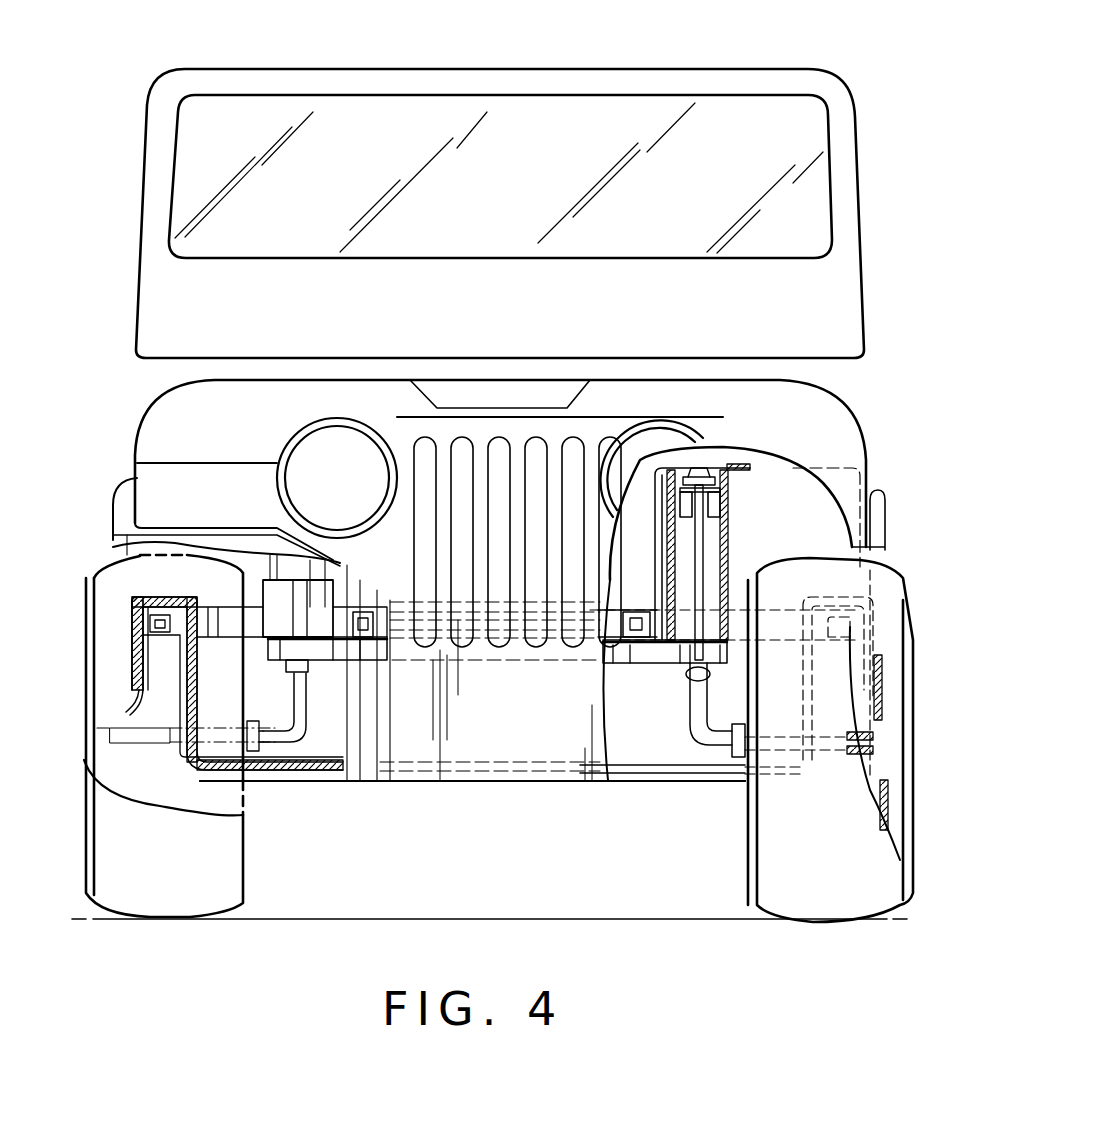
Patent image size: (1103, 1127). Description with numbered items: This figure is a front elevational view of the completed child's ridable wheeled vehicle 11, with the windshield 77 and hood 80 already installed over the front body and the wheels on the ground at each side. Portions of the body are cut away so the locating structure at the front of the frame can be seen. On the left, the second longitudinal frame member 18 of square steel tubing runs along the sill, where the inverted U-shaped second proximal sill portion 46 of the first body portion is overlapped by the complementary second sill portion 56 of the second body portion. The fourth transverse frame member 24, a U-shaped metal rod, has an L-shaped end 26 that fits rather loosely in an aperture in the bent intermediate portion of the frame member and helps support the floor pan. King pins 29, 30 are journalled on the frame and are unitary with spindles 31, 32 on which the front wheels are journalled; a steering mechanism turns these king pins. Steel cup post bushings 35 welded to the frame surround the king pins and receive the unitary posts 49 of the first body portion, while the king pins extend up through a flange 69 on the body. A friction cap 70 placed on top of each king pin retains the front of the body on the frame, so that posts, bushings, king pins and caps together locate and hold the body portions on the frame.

The child's ridable wheeled vehicle 11 is at (886, 215).
The second longitudinal frame member 18 is at (162, 636).
The fourth transverse frame member 24 is at (287, 783).
The L-shaped end 26 is at (162, 605).
The king pin 29 is at (697, 697).
The king pin 30 is at (298, 700).
The spindle 31 is at (717, 742).
The spindle 32 is at (123, 733).
The post bushing 35 is at (728, 598).
The second proximal sill portion 46 is at (142, 695).
The unitary post 49 is at (734, 520).
The second sill portion 56 is at (130, 632).
The flange 69 is at (716, 489).
The friction cap 70 is at (703, 470).
The windshield 77 is at (725, 80).
The hood 80 is at (722, 385).